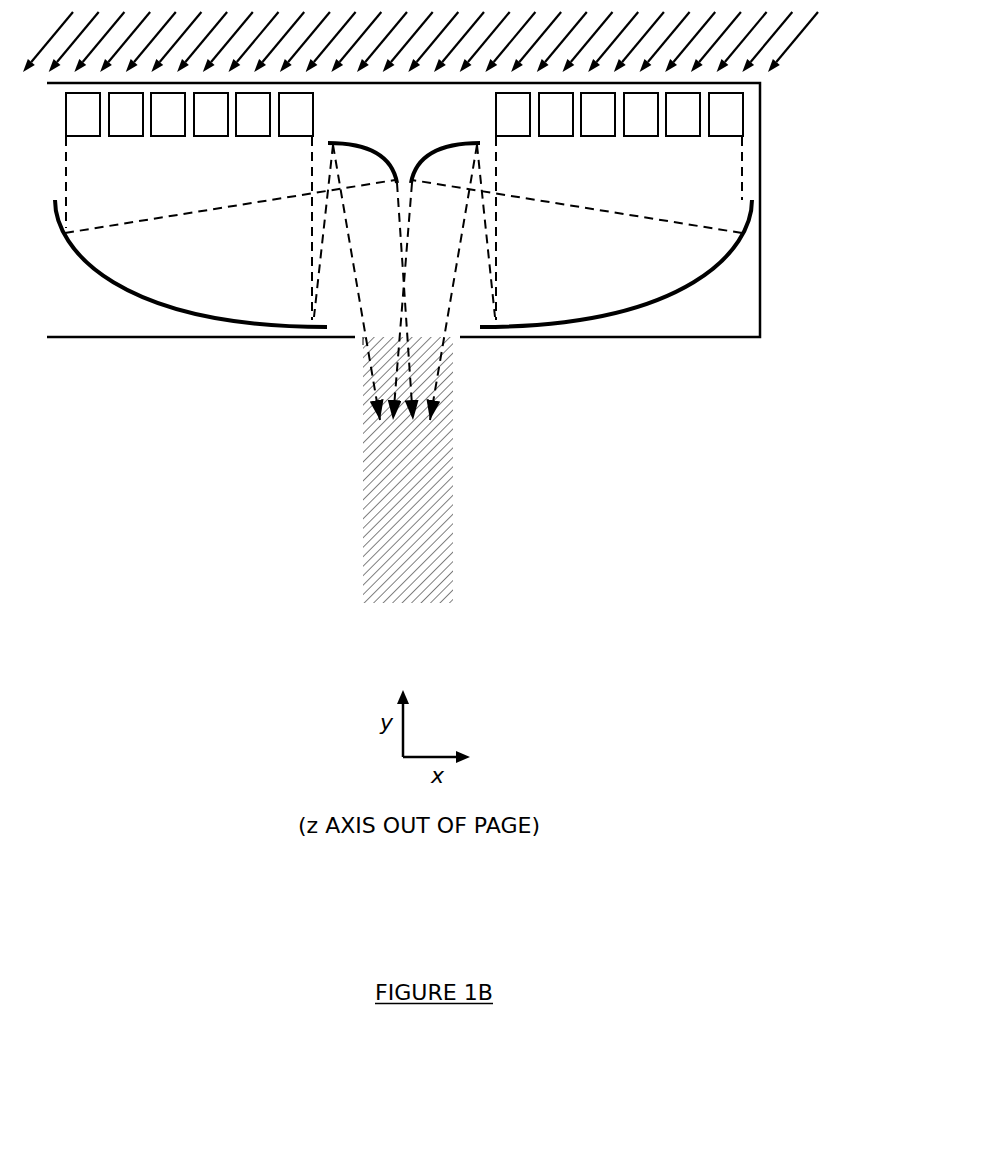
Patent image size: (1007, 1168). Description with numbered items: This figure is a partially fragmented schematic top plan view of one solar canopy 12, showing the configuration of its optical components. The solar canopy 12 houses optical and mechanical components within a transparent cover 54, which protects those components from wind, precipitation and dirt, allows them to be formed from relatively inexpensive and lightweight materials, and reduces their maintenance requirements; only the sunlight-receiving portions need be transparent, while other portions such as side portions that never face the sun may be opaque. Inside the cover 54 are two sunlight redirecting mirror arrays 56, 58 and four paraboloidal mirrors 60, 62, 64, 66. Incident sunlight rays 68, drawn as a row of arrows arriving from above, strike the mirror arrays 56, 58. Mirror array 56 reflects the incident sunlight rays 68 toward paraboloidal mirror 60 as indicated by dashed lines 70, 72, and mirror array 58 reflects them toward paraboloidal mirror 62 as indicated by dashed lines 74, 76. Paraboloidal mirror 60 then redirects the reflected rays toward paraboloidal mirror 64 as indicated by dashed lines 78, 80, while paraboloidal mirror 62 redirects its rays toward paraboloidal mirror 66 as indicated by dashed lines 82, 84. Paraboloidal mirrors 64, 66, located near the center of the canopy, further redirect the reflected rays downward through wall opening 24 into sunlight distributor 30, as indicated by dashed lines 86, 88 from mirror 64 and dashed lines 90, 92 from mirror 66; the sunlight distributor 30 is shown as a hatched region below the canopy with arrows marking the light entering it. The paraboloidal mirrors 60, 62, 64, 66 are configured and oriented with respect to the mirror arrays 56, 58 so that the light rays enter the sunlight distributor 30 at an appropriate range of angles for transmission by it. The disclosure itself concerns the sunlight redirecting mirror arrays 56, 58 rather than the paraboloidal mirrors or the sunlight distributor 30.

The solar canopy 12 is at (108, 337).
The wall opening 24 is at (358, 338).
The sunlight distributor 30 is at (365, 458).
The transparent cover 54 is at (762, 265).
The sunlight redirecting mirror array 56 is at (307, 140).
The sunlight redirecting mirror array 58 is at (741, 140).
The paraboloidal mirror 60 is at (118, 290).
The paraboloidal mirror 62 is at (700, 280).
The paraboloidal mirror 64 is at (340, 143).
The paraboloidal mirror 66 is at (468, 143).
The incident sunlight rays 68 is at (833, 10).
The dashed line 70 is at (66, 203).
The dashed line 72 is at (312, 225).
The dashed line 74 is at (742, 172).
The dashed line 76 is at (497, 243).
The dashed line 78 is at (163, 218).
The dashed line 80 is at (316, 255).
The dashed line 82 is at (617, 213).
The dashed line 84 is at (490, 253).
The dashed line 86 is at (345, 215).
The dashed line 88 is at (402, 270).
The dashed line 90 is at (465, 206).
The dashed line 92 is at (410, 243).